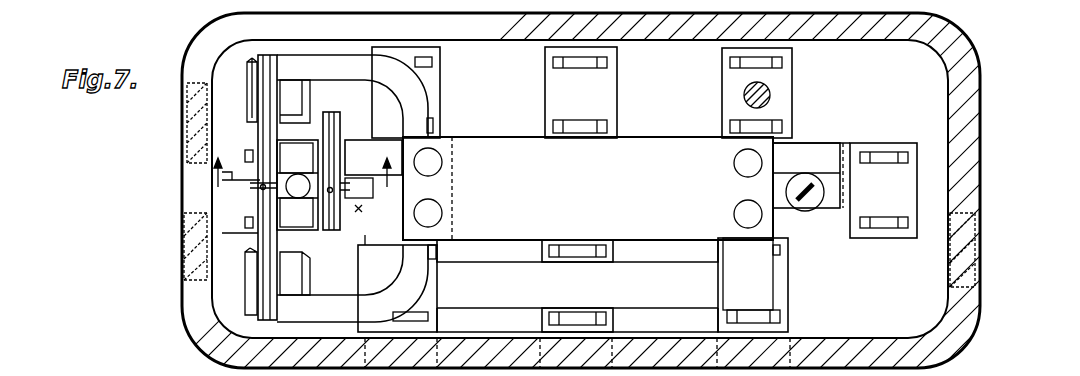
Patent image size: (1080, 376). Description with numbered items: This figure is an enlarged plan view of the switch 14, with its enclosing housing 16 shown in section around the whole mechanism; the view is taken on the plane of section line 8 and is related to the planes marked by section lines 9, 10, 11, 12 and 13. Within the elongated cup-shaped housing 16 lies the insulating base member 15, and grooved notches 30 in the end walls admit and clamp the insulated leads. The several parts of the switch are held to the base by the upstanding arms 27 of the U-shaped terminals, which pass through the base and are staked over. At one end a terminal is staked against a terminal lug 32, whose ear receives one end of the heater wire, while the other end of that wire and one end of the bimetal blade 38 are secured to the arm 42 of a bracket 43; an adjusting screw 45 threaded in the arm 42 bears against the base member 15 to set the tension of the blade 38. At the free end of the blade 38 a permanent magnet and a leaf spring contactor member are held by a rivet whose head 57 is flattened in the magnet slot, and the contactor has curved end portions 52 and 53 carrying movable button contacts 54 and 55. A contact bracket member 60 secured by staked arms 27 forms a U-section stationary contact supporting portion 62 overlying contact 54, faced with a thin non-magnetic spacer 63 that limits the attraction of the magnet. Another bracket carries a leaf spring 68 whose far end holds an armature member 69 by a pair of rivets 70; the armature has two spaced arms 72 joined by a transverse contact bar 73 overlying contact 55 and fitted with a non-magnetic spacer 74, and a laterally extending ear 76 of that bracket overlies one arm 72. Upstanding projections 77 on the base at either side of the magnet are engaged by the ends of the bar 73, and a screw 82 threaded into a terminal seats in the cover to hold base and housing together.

The section line 8- 8 is at (165, 320).
The section line 9 is at (210, 371).
The section line 10 is at (738, 371).
The section line 11 is at (277, 48).
The section line 12 is at (245, 222).
The section line 13 is at (835, 229).
The switch 14 is at (1030, 44).
The base plate or member 15 is at (918, 115).
The housing 16 is at (968, 134).
The upstanding arm 27 is at (437, 62).
The grooved notches 30 is at (181, 138).
The terminal lug 32 is at (237, 242).
The bimetal blade 38 is at (392, 208).
The arm 42 is at (830, 178).
The bracket 43 is at (842, 146).
The adjusting screw 45 is at (798, 165).
The curved end portion 52 is at (338, 195).
The curved end portion 53 is at (235, 183).
The movable button contact 54 is at (380, 164).
The movable button contact 55 is at (252, 167).
The rivet head 57 is at (297, 187).
The contact bracket member 60 is at (438, 70).
The stationary contact supporting portion 62 is at (332, 117).
The non-magnetic spacer 63 is at (318, 213).
The leaf spring 68 is at (652, 148).
The armature member 69 is at (430, 89).
The rivets 70 is at (428, 162).
The arms 72 is at (325, 73).
The contact bar or rod portion 73 is at (250, 78).
The non-magnetic spacer 74 is at (263, 185).
The laterally extending ear 76 is at (360, 310).
The upstanding projections 77 is at (247, 96).
The screw 82 is at (742, 95).